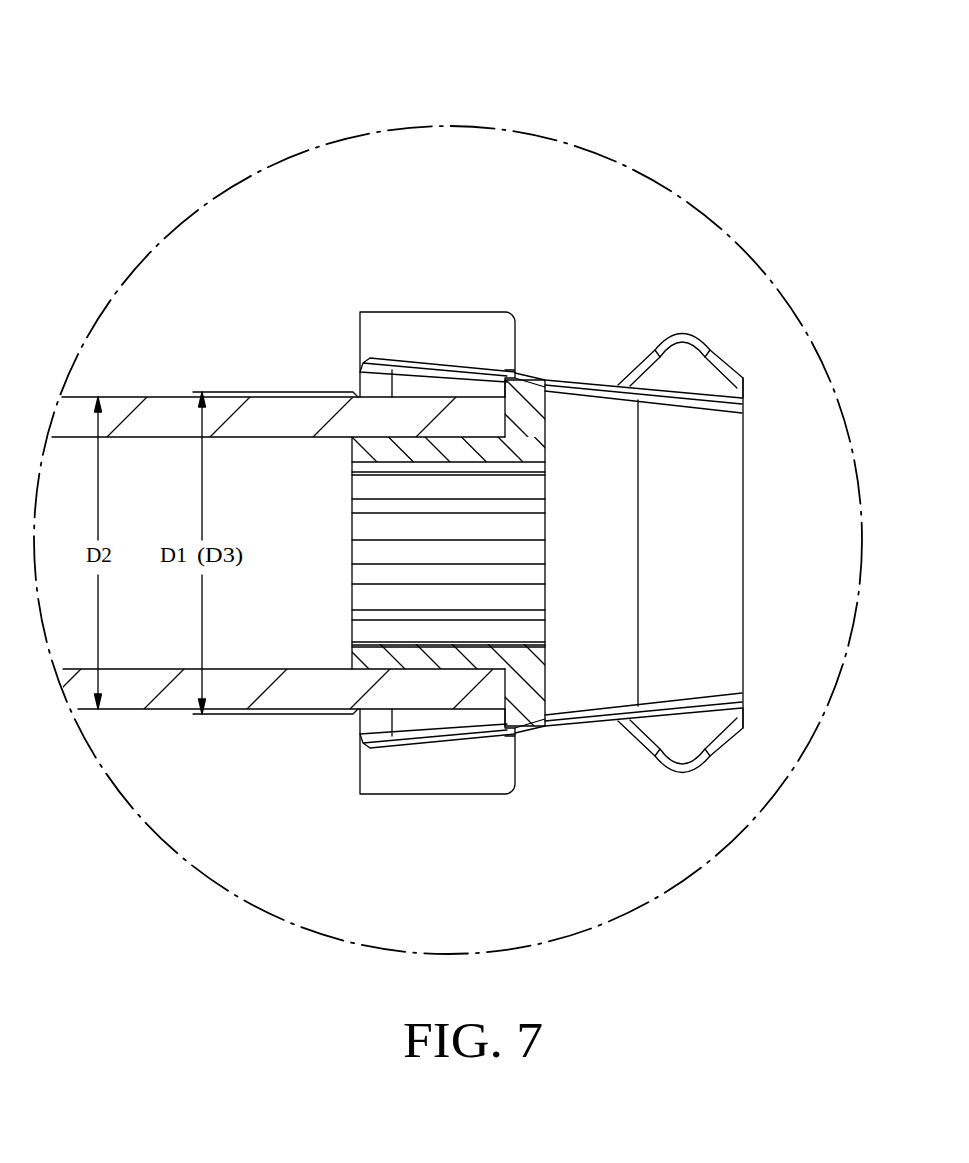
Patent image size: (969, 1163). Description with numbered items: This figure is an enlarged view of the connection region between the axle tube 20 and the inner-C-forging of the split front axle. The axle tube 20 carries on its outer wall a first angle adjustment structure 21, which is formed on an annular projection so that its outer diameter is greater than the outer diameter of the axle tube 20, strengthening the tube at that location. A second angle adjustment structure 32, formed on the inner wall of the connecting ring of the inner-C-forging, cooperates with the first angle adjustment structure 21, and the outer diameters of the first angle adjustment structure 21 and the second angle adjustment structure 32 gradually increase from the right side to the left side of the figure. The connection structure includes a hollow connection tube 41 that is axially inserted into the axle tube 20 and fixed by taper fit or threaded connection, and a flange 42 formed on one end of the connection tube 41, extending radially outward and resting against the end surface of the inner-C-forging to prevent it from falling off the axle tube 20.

The axle tube 20 is at (165, 397).
The first angle adjustment structure 21 is at (353, 392).
The second angle adjustment structure 32 is at (448, 395).
The connection tube 41 is at (480, 657).
The flange 42 is at (413, 450).